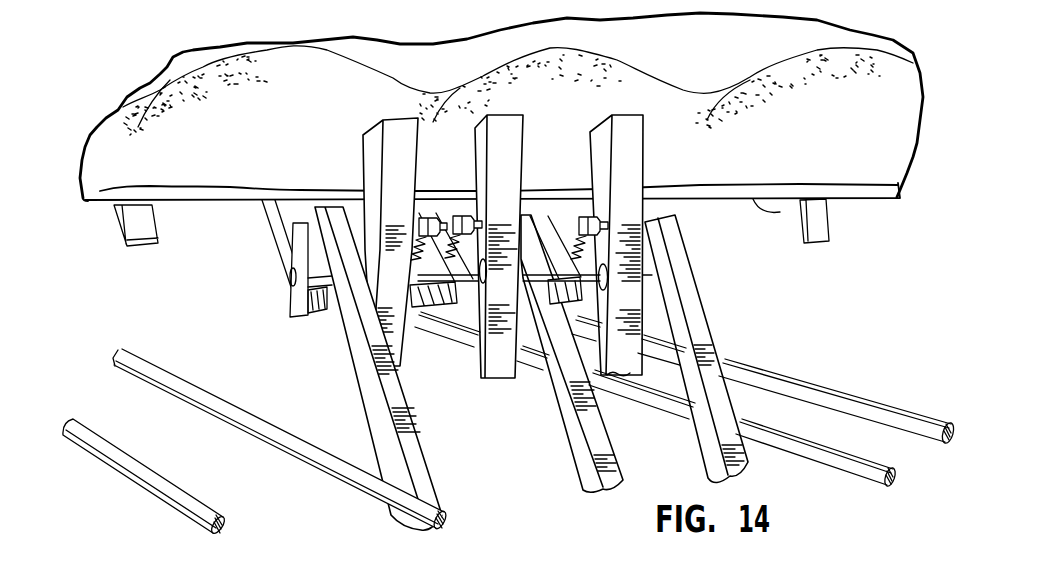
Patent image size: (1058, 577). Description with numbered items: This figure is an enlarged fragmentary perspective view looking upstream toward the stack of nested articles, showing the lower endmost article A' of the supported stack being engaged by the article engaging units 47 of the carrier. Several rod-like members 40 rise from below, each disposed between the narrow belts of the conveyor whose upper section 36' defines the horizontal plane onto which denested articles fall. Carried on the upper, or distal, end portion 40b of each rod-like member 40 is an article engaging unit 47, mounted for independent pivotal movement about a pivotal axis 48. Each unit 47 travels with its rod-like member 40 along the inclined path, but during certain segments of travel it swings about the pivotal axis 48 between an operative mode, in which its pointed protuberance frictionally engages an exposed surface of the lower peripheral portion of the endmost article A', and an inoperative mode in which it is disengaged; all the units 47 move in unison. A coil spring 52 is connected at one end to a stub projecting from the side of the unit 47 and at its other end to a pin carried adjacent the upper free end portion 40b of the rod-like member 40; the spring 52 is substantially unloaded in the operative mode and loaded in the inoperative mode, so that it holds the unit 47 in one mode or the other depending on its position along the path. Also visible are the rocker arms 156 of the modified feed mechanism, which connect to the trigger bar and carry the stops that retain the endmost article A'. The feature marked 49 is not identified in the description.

The article engaging unit 47 is at (634, 157).
The coil spring 52 is at (582, 214).
The upper end portion of rod-like member 40b is at (655, 262).
The pivotal axis 48 is at (608, 282).
The rod-like member 40 is at (694, 332).
The upper section of conveyor 36' is at (509, 423).
The notch in slat 49 is at (621, 365).
The rocker arm 156 is at (262, 219).
The endmost article A' is at (501, 105).